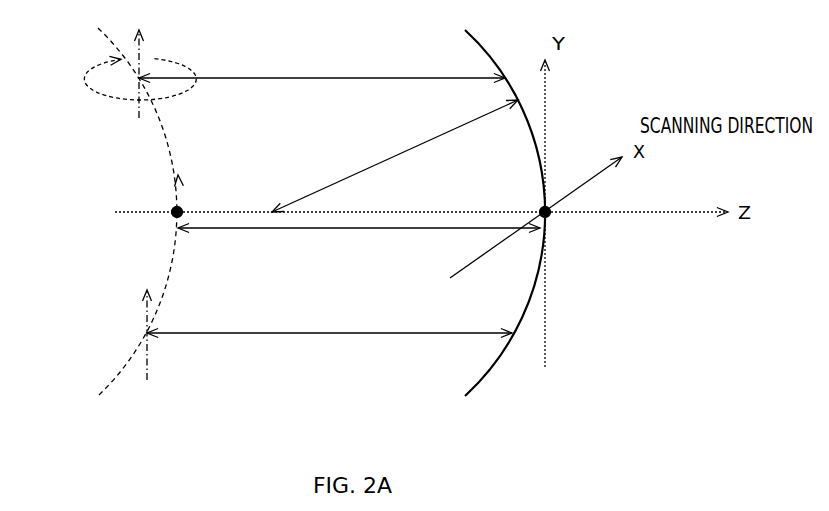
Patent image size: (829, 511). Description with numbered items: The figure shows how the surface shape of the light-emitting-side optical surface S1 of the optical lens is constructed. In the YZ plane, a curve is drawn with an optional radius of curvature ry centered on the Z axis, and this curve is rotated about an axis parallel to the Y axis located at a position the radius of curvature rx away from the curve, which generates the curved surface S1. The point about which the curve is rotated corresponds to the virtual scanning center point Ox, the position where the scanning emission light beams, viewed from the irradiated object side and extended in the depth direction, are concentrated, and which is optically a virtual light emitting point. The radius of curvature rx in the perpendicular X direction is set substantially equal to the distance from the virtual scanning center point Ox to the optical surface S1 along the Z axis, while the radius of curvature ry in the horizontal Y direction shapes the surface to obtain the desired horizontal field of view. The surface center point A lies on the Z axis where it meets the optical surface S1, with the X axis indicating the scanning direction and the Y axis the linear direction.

The optical surface S1 is at (518, 201).
The S1 surface center point A is at (619, 240).
The virtual scanning center point Ox is at (97, 211).
The radius of curvature in the perpendicular (X) direction rx is at (359, 244).
The radius of curvature in the horizontal (Y) direction ry is at (395, 145).